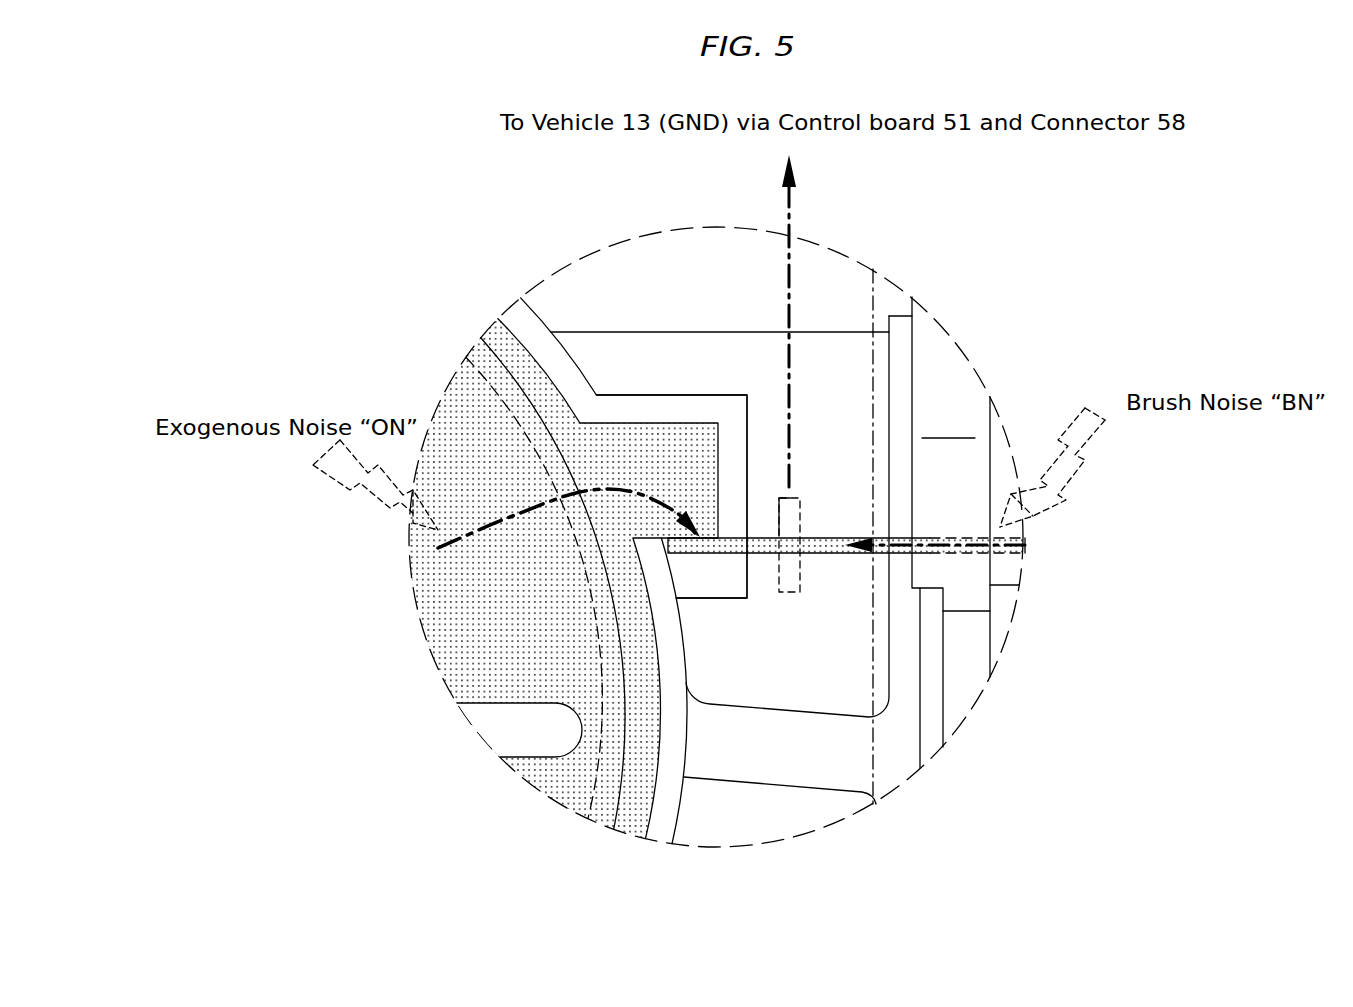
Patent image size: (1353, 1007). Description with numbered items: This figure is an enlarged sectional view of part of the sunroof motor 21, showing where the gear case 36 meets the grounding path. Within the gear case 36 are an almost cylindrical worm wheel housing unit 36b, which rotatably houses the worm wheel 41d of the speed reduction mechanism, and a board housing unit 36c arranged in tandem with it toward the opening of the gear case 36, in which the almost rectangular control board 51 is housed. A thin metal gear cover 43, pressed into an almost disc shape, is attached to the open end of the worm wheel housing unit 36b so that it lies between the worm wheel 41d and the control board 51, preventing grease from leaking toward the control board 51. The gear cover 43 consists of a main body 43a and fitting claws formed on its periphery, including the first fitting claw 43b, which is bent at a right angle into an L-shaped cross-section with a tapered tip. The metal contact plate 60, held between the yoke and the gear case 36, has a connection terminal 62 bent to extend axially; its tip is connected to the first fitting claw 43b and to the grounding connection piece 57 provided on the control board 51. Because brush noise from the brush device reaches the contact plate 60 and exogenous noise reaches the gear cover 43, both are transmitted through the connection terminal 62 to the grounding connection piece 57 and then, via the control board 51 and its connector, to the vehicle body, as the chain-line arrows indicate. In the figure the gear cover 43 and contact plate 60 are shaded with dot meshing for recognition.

The sunroof motor 21 is at (420, 272).
The gear case 36 is at (903, 790).
The worm wheel housing unit 36b is at (534, 335).
The board housing unit 36c is at (815, 280).
The worm wheel 41d is at (553, 787).
The gear cover 43 is at (432, 658).
The main body 43a is at (480, 598).
The first fitting claw 43b is at (677, 470).
The control board 51 is at (873, 300).
The grounding connection piece 57 is at (790, 582).
The contact plate 60 is at (963, 553).
The connection terminal 62 is at (820, 538).